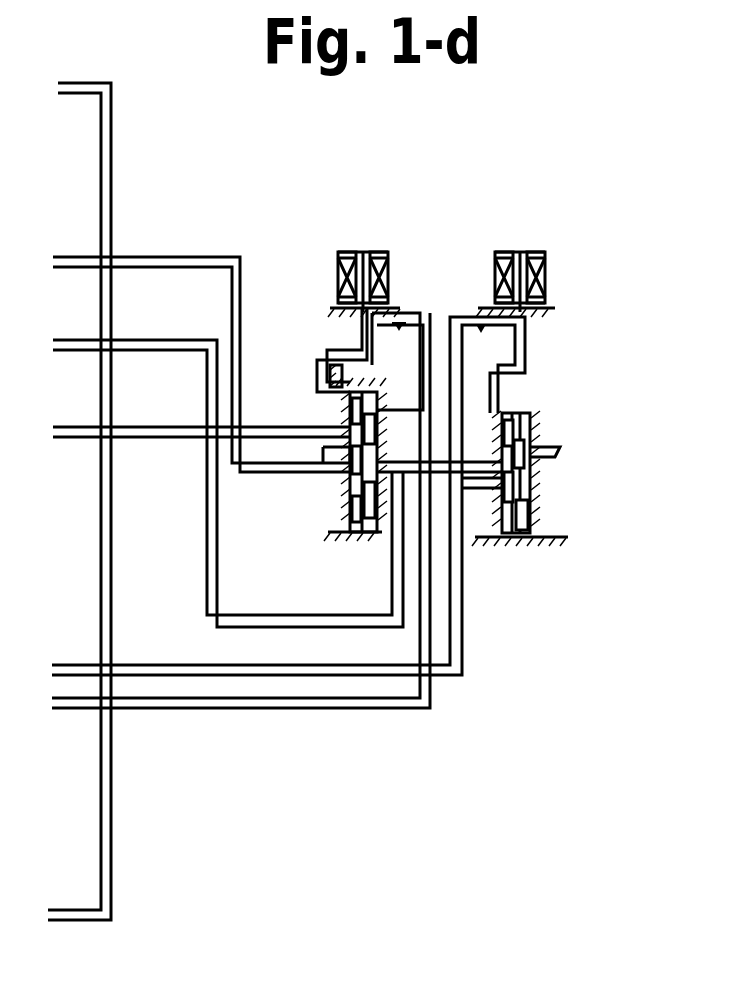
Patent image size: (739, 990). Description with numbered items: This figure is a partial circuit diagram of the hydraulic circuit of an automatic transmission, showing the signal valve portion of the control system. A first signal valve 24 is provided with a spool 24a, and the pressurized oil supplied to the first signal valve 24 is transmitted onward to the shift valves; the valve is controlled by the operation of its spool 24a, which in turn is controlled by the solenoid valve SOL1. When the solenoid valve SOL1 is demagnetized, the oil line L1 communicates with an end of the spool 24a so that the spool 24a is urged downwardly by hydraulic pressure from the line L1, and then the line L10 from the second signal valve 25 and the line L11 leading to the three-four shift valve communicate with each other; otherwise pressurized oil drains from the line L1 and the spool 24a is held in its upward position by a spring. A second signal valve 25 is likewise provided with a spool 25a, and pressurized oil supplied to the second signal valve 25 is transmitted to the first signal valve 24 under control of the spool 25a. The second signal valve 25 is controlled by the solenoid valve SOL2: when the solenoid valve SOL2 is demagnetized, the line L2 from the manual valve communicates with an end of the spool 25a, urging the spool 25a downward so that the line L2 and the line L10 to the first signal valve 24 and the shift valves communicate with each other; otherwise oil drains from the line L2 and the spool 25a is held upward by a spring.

The oil line L11 is at (184, 257).
The oil line L10 is at (302, 622).
The oil line L1 is at (397, 707).
The oil line L2 is at (299, 675).
The solenoid valve SOL1 is at (368, 240).
The solenoid valve SOL2 is at (525, 239).
The first signal valve 24 is at (324, 413).
The spool 24a is at (333, 372).
The second signal valve 25 is at (553, 406).
The spool 25a is at (548, 446).